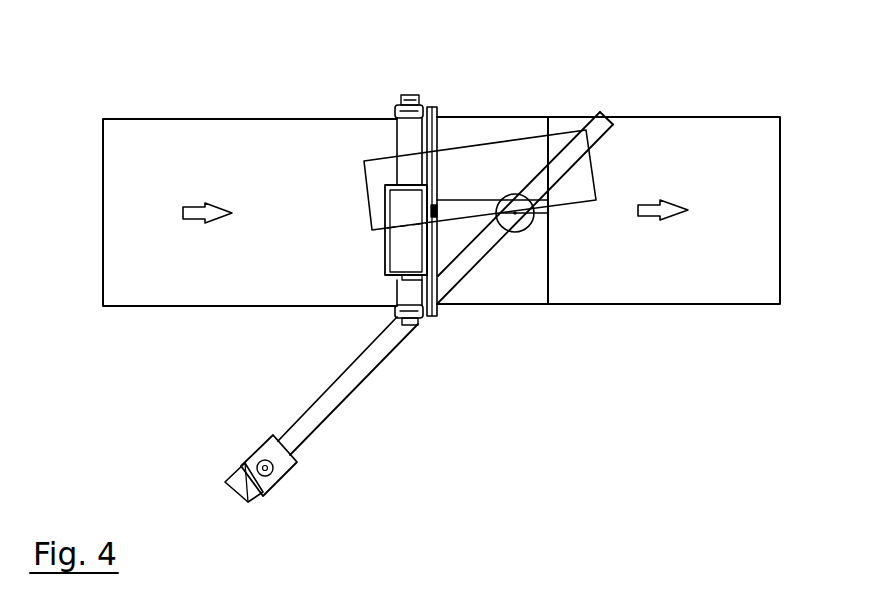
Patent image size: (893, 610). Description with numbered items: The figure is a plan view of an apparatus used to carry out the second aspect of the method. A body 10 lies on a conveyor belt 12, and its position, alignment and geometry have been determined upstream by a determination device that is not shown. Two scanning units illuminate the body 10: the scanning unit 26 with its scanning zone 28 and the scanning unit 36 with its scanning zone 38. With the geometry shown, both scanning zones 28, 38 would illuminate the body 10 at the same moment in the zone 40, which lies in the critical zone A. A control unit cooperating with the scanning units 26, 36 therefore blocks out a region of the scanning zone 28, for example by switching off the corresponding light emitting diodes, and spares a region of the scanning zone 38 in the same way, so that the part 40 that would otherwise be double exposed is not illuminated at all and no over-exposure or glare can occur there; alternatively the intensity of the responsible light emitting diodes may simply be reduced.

The body 10 is at (553, 145).
The conveyor belt 12 is at (700, 138).
The scanning unit 26 is at (296, 463).
The scanning zone 28 is at (332, 408).
The scanning unit 36 is at (410, 96).
The scanning zone 38 is at (460, 125).
The zone 40 is at (521, 233).
The critical zone A is at (512, 232).